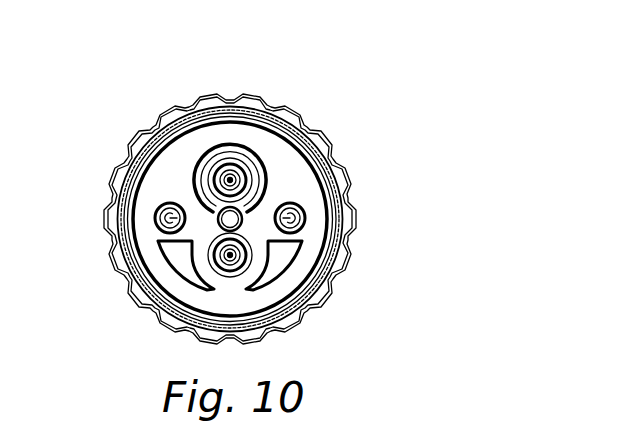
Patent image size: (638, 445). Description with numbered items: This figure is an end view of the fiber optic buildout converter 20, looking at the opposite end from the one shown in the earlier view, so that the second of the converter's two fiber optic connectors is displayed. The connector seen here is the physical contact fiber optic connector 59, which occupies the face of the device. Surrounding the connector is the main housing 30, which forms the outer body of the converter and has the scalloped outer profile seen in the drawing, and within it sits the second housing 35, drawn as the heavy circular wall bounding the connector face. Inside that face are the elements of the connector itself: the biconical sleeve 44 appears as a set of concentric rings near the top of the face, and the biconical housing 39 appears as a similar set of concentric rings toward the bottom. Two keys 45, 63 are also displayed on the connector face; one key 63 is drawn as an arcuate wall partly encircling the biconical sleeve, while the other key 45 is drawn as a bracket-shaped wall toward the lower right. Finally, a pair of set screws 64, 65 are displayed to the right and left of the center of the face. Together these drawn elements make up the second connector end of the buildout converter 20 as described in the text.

The fiber optic buildout converter 20 is at (157, 95).
The main housing 30 is at (319, 131).
The second housing 35 is at (283, 133).
The biconical housing 39 is at (228, 266).
The biconical sleeve 44 is at (246, 172).
The key 45 is at (249, 281).
The physical contact fiber optic connector 59 is at (280, 191).
The key 63 is at (190, 197).
The set screw 64 is at (305, 218).
The set screw 65 is at (155, 219).